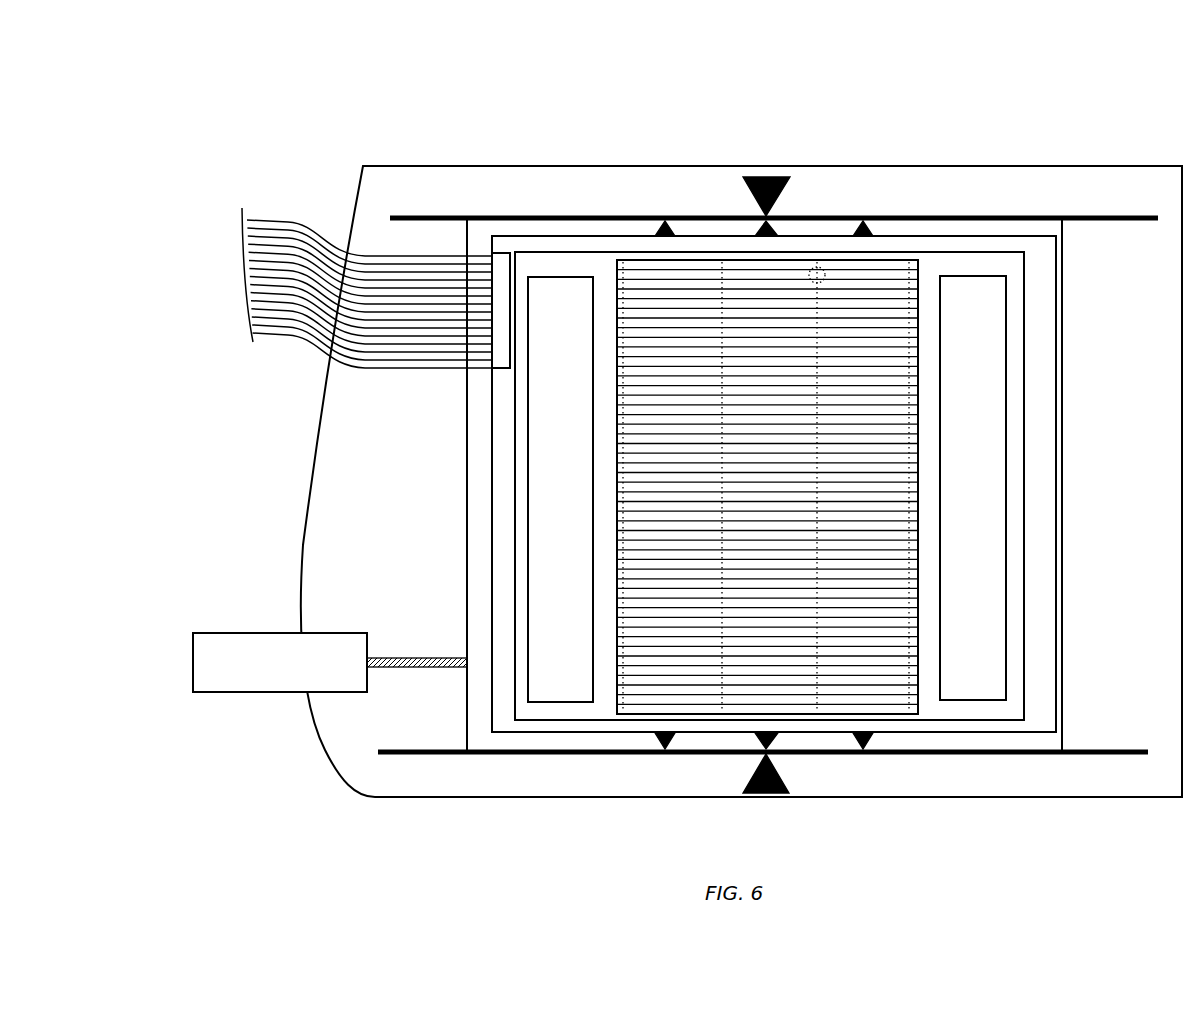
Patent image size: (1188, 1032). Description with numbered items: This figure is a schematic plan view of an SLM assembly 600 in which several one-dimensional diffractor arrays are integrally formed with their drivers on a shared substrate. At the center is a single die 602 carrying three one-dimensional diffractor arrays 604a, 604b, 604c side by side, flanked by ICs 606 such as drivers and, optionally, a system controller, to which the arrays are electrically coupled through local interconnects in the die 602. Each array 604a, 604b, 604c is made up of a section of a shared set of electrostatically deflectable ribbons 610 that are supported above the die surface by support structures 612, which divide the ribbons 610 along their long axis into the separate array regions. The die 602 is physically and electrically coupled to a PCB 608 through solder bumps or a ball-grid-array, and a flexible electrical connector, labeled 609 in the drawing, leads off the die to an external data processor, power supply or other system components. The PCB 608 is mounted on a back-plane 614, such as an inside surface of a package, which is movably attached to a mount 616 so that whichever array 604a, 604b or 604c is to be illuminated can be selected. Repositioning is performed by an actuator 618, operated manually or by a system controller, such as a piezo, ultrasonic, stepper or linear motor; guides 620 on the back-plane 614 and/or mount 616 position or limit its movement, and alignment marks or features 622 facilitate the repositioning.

The SLM assembly 600 is at (241, 79).
The die 602 is at (945, 252).
The 1D diffractor array 604a is at (706, 506).
The 1D diffractor array 604b is at (795, 506).
The 1D diffractor array 604c is at (890, 506).
The ICs 606 is at (579, 499).
The PCB 608 is at (492, 468).
The ribbon cable connector 609 is at (358, 370).
The electrostatically deflectable ribbons 610 is at (885, 260).
The support structures 612 is at (818, 266).
The back-plane 614 is at (467, 418).
The mount 616 is at (307, 484).
The actuator 618 is at (301, 674).
The guides 620 is at (1136, 221).
The alignment marks or features 622 is at (731, 782).